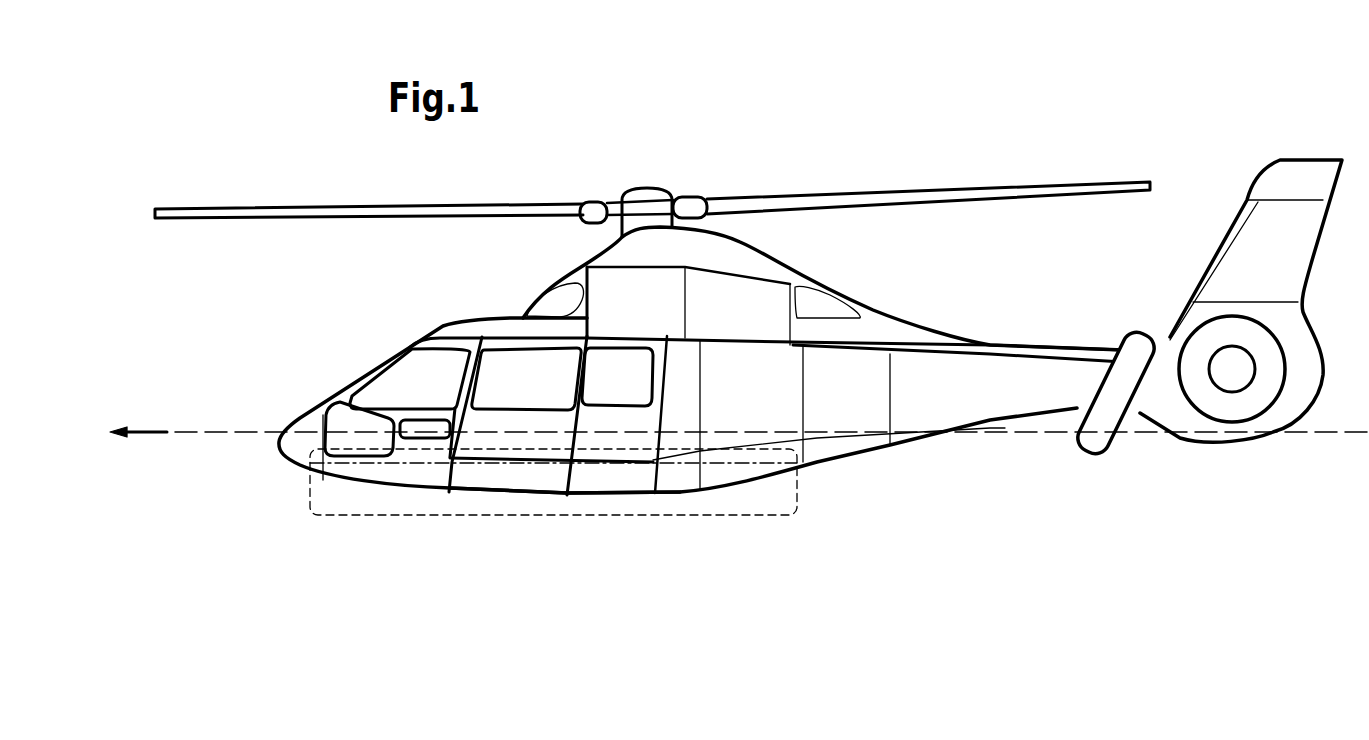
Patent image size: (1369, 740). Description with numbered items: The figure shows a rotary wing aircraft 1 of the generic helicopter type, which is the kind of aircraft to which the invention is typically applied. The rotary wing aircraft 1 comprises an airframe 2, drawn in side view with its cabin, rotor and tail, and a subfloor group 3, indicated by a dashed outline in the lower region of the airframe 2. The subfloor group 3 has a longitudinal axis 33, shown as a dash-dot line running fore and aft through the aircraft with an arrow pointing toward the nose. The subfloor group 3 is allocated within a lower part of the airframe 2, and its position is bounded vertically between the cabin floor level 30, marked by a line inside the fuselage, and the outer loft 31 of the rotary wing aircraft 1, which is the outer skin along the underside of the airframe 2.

The rotary wing aircraft 1 is at (739, 350).
The airframe 2 is at (850, 461).
The subfloor group 3 is at (472, 518).
The cabin floor level 30 is at (722, 462).
The outer loft 31 is at (570, 495).
The longitudinal axis 33 is at (184, 430).